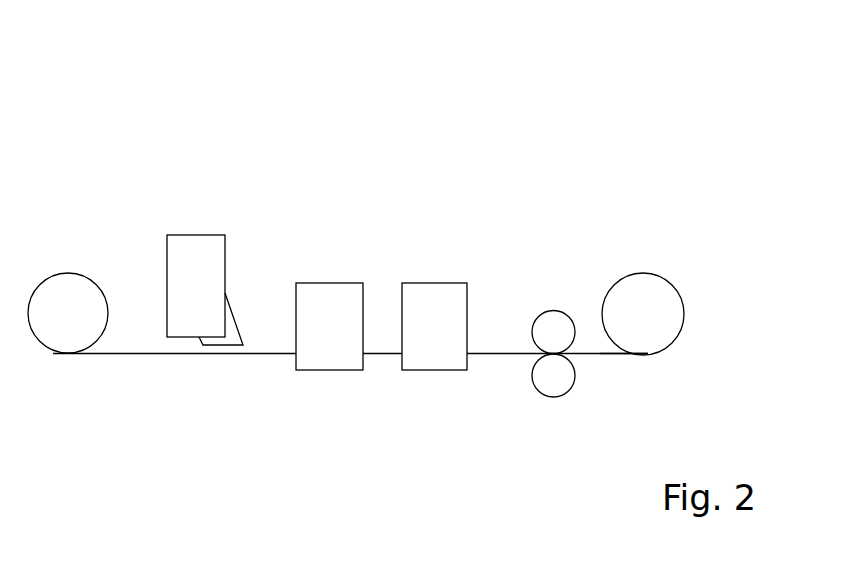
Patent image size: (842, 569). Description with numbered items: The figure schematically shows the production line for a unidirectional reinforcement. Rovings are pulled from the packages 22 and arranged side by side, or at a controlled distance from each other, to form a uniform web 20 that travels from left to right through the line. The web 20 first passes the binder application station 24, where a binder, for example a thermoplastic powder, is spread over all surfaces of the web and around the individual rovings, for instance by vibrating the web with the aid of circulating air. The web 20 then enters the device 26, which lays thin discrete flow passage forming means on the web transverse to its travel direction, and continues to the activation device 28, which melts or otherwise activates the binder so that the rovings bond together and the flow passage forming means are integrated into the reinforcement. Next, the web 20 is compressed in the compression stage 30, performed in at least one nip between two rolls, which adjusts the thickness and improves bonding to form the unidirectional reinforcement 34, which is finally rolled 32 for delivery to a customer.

The web 20 is at (182, 355).
The packages 22 is at (70, 292).
The binder application station 24 is at (192, 262).
The device introducing thin discrete flow passage forming means 26 is at (320, 295).
The activation device 28 is at (433, 290).
The compression stage 30 is at (558, 340).
The rolling 32 is at (653, 330).
The unidirectional reinforcement 34 is at (600, 355).